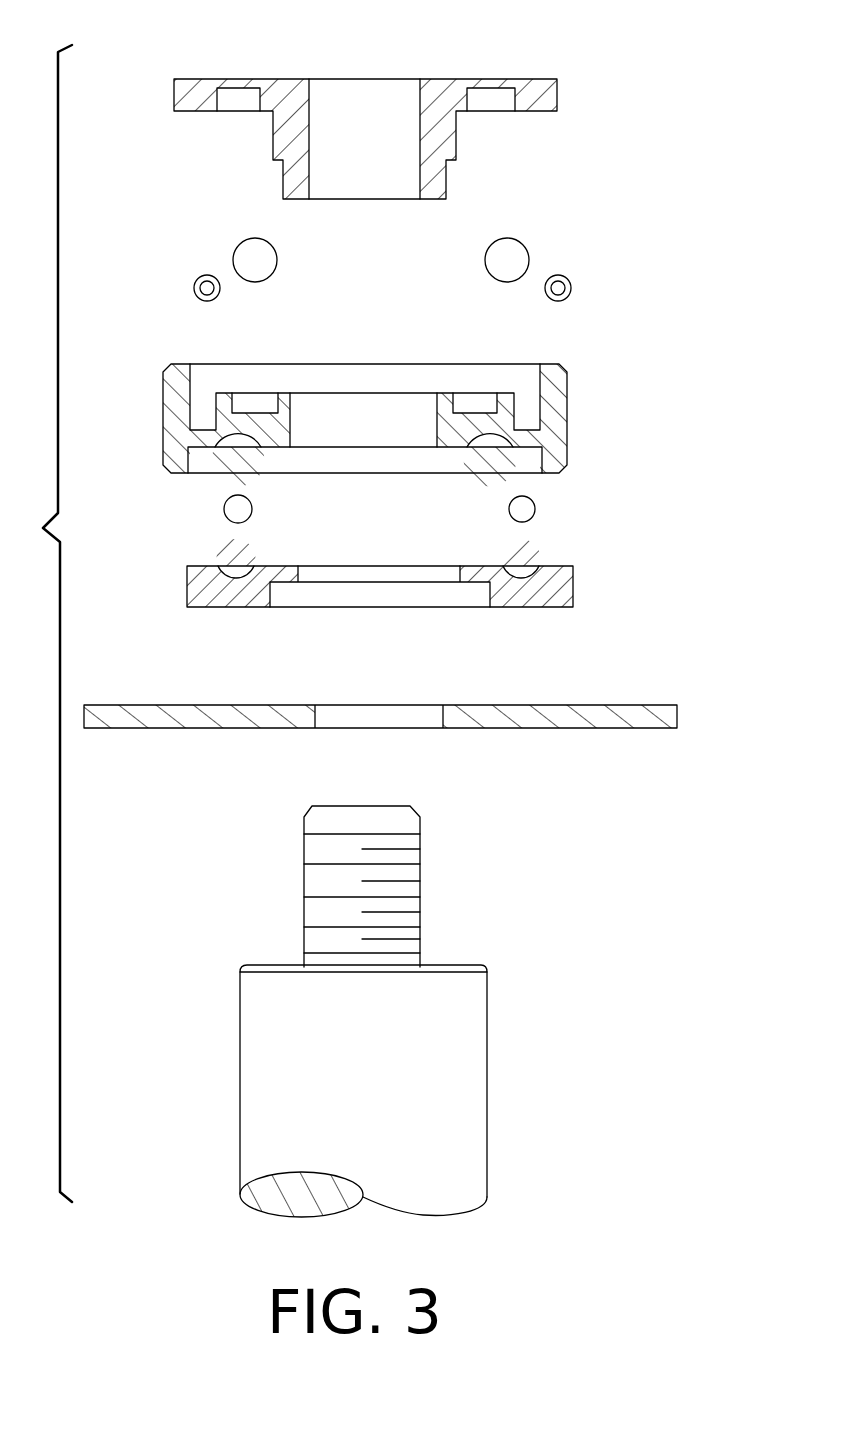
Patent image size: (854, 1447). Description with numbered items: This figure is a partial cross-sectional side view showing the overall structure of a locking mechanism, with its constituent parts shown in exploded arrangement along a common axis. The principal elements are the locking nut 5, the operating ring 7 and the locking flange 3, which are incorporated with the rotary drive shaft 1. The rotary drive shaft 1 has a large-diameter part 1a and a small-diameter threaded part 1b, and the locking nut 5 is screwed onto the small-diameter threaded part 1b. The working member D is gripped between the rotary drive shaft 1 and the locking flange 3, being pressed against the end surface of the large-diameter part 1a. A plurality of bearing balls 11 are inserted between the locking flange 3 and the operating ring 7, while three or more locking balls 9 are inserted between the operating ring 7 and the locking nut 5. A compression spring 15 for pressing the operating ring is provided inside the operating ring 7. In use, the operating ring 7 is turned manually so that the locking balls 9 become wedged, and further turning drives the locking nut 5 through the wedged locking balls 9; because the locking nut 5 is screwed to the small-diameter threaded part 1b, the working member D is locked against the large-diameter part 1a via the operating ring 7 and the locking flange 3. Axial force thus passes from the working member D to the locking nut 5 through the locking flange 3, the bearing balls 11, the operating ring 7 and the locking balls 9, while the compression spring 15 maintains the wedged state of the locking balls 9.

The rotary drive shaft 1 is at (475, 1062).
The large-diameter part 1a is at (250, 1063).
The small-diameter threaded part 1b is at (420, 900).
The locking flange 3 is at (565, 588).
The locking nut 5 is at (442, 90).
The operating ring 7 is at (558, 432).
The locking balls 9 is at (250, 248).
The bearing balls 11 is at (535, 510).
The compression spring 15 is at (198, 286).
The working member D is at (668, 718).